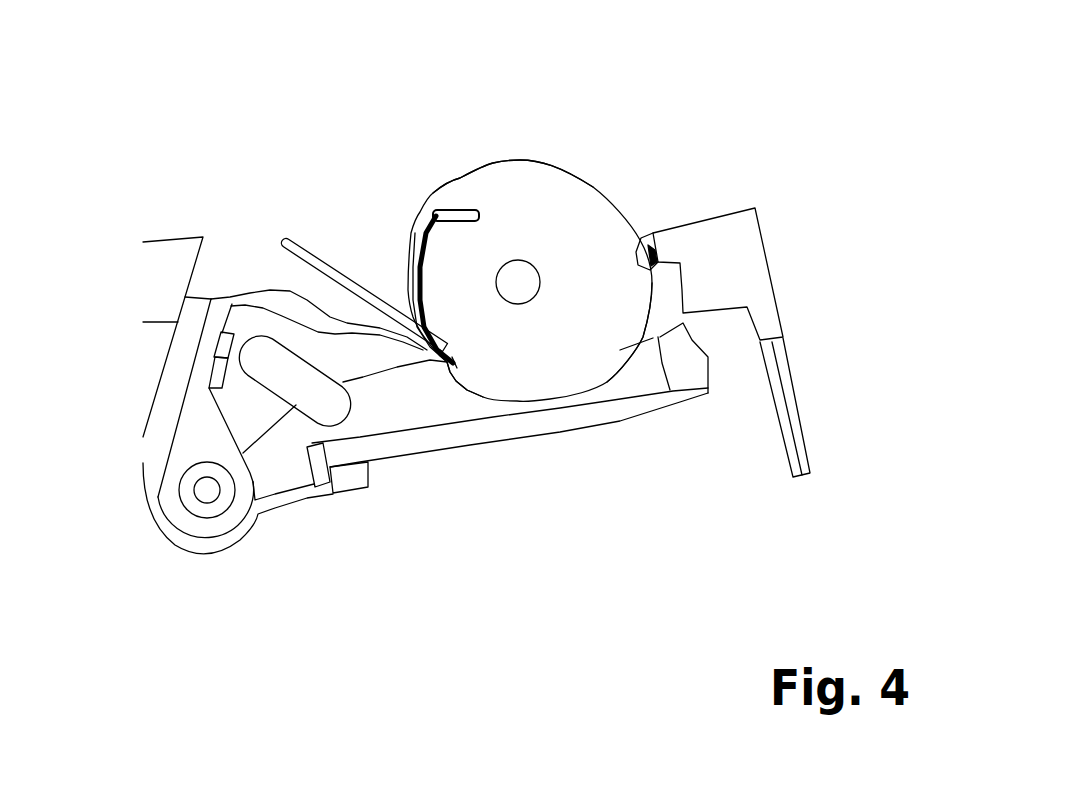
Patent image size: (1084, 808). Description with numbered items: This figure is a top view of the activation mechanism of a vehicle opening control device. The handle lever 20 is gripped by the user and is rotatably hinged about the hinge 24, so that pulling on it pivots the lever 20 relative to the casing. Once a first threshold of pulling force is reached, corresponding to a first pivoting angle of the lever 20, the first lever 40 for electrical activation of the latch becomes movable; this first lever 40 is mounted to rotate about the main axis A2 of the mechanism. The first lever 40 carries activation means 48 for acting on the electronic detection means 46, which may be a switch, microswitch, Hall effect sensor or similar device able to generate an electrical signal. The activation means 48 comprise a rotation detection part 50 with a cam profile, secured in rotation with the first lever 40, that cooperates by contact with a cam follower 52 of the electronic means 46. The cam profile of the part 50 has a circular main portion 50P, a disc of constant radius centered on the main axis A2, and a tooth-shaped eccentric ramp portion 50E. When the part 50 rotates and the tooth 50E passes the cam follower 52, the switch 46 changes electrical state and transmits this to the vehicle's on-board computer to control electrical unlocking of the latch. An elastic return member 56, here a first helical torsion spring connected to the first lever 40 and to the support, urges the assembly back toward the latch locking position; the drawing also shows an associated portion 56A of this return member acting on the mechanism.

The lever 20 is at (157, 312).
The hinge 24 is at (207, 490).
The first lever 40 is at (662, 158).
The electronic detection means 46 is at (795, 308).
The activation means 48 is at (745, 273).
The rotation detection part 50 is at (555, 165).
The circular main portion 50P is at (498, 197).
The eccentric ramp portion 50E is at (613, 330).
The cam follower 52 is at (670, 250).
The elastic return member 56 is at (416, 217).
The band rod 56A is at (318, 250).
The main axis A2 is at (518, 282).